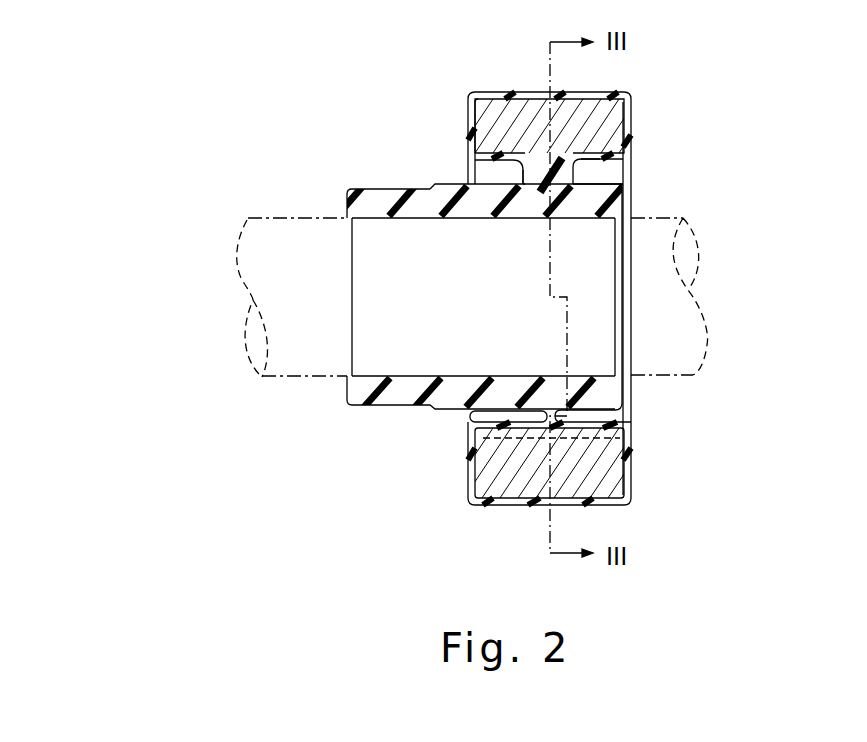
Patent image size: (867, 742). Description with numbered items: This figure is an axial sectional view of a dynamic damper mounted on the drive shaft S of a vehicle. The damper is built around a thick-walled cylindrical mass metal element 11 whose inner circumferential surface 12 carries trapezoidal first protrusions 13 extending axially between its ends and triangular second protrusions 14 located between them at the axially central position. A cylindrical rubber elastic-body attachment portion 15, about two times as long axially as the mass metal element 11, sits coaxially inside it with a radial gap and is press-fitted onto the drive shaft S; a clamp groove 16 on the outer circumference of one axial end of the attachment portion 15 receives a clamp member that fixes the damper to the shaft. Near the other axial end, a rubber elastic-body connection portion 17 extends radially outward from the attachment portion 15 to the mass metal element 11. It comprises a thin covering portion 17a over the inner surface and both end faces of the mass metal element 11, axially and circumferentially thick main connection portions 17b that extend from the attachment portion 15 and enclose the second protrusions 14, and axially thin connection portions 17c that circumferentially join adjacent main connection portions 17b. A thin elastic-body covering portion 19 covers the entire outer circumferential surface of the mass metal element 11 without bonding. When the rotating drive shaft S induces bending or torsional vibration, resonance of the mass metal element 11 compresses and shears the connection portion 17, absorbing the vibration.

The drive shaft S is at (308, 217).
The mass metal element 11 is at (591, 100).
The inner circumferential surface 12 is at (593, 156).
The first protrusions 13 is at (621, 432).
The second protrusions 14 is at (553, 168).
The elastic-body attachment portion 15 is at (620, 199).
The clamp groove 16 is at (380, 189).
The elastic-body connection portion 17 is at (460, 176).
The thin covering portion 17a is at (466, 176).
The main connection portions 17b is at (594, 168).
The connection portions 17c is at (567, 417).
The elastic-body covering portion 19 is at (626, 93).